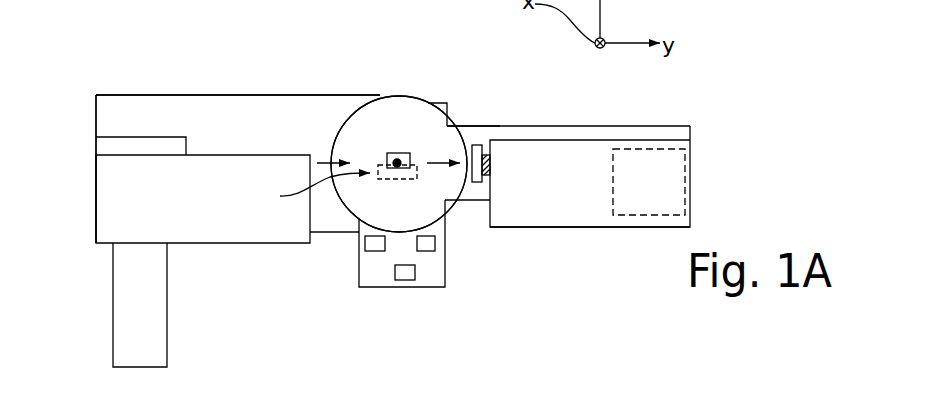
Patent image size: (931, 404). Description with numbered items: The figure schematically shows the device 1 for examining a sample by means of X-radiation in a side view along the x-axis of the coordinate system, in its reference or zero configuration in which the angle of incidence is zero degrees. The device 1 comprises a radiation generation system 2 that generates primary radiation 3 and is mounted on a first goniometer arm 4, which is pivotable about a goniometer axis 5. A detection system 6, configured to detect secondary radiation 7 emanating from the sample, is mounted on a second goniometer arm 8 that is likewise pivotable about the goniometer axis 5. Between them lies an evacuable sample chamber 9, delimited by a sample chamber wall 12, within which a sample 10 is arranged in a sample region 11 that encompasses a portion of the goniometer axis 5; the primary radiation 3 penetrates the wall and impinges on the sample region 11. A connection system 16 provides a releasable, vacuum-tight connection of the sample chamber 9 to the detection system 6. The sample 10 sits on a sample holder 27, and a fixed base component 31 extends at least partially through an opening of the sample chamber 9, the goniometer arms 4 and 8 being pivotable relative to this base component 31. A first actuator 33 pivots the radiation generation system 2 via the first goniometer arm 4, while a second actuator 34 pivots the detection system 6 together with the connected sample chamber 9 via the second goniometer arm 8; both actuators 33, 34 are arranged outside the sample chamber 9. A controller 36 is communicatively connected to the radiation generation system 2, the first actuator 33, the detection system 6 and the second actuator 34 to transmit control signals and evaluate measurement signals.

The device for examining a sample 1 is at (175, 72).
The radiation generation system 2 is at (213, 272).
The primary radiation 3 is at (338, 157).
The first goniometer arm 4 is at (263, 113).
The goniometer axis 5 is at (434, 161).
The detection system 6 is at (585, 243).
The secondary radiation 7 is at (462, 116).
The second goniometer arm 8 is at (600, 133).
The sample chamber 9 is at (462, 116).
The sample 10 is at (388, 153).
The sample region 11 is at (311, 192).
The sample chamber wall 12 is at (377, 117).
The connection system 16 is at (482, 140).
The sample holder 27 is at (397, 180).
The base component 31 is at (433, 272).
The first actuator 33 is at (365, 242).
The second actuator 34 is at (435, 243).
The controller 36 is at (402, 282).